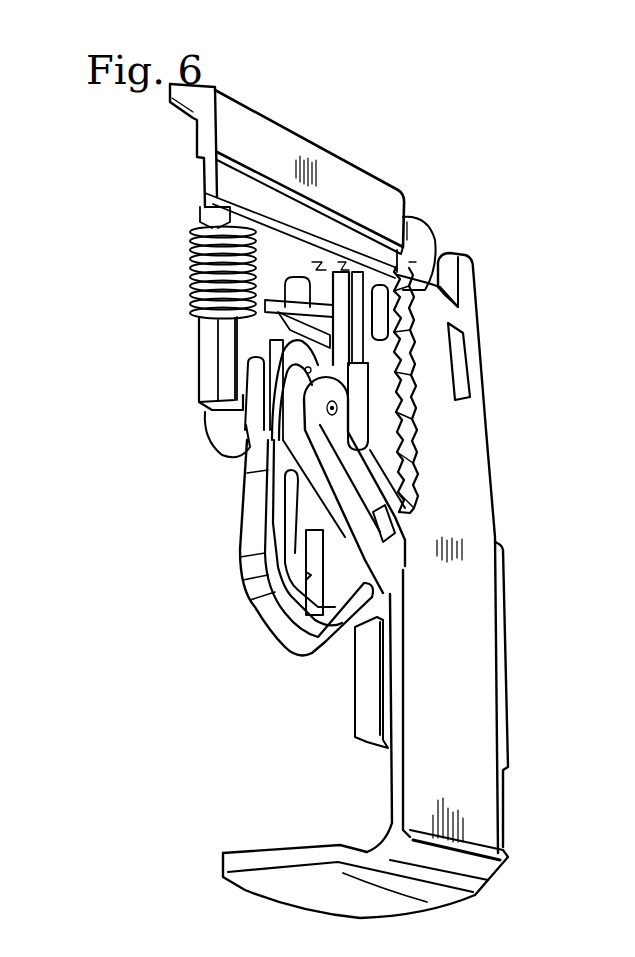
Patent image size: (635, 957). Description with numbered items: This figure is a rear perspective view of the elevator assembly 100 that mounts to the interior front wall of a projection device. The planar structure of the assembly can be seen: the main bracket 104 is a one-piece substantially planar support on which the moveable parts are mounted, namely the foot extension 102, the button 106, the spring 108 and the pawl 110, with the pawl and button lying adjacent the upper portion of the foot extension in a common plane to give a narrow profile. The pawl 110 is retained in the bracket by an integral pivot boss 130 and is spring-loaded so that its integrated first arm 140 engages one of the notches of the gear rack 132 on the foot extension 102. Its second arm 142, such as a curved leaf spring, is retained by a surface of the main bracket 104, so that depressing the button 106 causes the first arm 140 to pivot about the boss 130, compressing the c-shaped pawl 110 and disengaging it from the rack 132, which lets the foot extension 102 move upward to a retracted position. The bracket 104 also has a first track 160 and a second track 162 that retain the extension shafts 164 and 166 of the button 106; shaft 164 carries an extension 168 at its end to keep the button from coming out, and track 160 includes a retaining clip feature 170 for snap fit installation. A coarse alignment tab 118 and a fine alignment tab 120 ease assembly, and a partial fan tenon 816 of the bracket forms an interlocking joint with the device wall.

The elevator assembly 100 is at (523, 327).
The foot extension 102 is at (477, 450).
The main bracket 104 is at (253, 510).
The button 106 is at (350, 195).
The spring 108 is at (190, 270).
The pawl 110 is at (383, 490).
The coarse alignment tab 118 is at (420, 240).
The fine alignment tab 120 is at (300, 293).
The pivot boss 130 is at (338, 410).
The gear rack 132 is at (408, 405).
The first arm 140 is at (497, 543).
The second arm 142 is at (275, 480).
The first track 160 is at (203, 368).
The second track 162 is at (415, 340).
The extension shaft 164 is at (250, 393).
The extension shaft 166 is at (432, 280).
The extension 168 is at (238, 448).
The retaining clip feature 170 is at (230, 345).
The partial fan tenon 816 is at (292, 606).